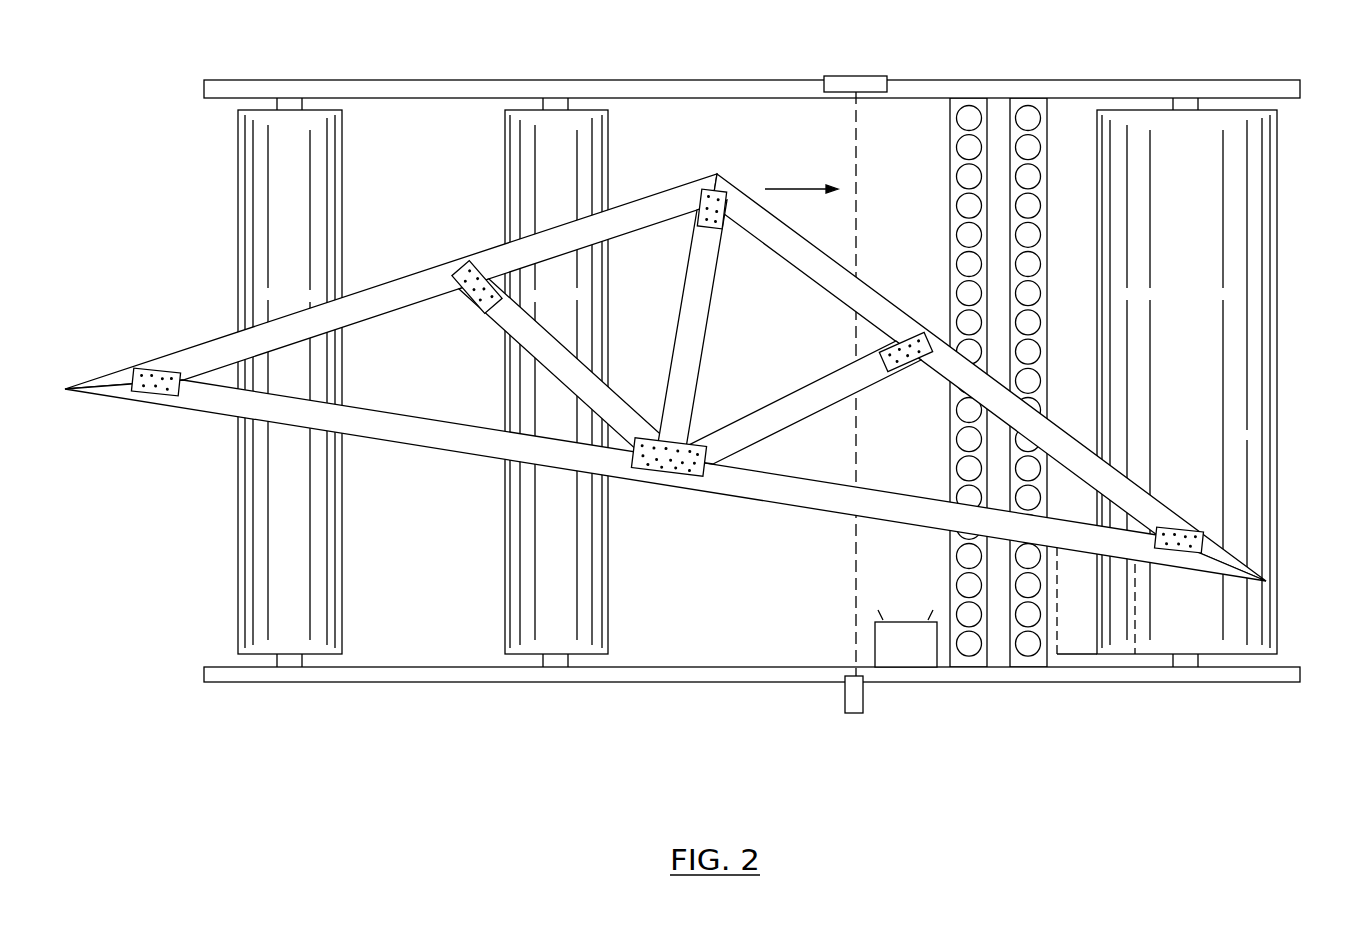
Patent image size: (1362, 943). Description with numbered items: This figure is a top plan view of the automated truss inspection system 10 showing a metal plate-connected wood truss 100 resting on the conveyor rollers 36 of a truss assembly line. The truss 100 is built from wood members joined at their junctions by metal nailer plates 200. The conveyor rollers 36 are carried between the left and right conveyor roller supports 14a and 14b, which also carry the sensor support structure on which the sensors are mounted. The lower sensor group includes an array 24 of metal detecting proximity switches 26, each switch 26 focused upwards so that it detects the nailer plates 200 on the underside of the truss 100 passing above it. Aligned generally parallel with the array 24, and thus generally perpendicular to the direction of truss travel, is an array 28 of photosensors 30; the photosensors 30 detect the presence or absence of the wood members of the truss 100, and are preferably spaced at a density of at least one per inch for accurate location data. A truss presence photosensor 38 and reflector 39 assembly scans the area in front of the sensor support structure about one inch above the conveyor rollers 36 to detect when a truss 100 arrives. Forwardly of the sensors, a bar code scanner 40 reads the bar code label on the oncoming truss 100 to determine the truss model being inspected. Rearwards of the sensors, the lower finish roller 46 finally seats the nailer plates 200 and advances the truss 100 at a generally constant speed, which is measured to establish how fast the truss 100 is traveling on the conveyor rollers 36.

The automated truss inspection system 10 is at (1013, 783).
The left conveyor roller support 14a is at (345, 85).
The right conveyor roller support 14b is at (338, 675).
The array of metal detecting proximity switches 24 is at (950, 153).
The metal detecting proximity switch 26 is at (973, 117).
The array of photosensors 28 is at (1008, 616).
The photosensor 30 is at (1033, 652).
The conveyor rollers 36 is at (553, 618).
The truss presence photosensor 38 is at (853, 713).
The reflector 39 is at (860, 78).
The bar code scanner 40 is at (914, 650).
The lower finish roller 46 is at (1202, 277).
The wood truss 100 is at (192, 353).
The metal nailer plate 200 is at (680, 478).